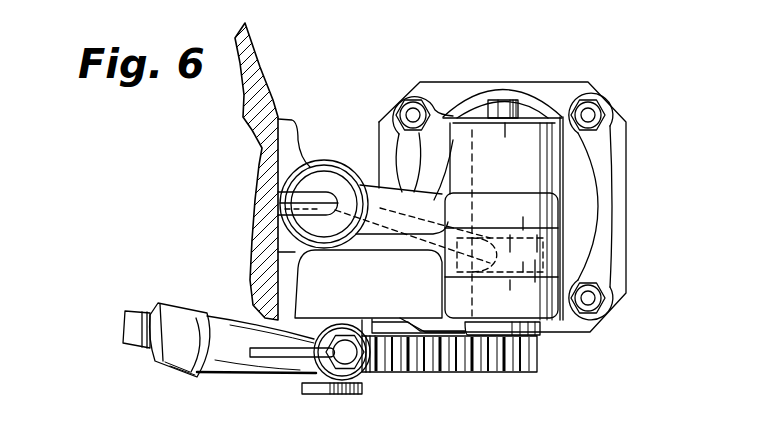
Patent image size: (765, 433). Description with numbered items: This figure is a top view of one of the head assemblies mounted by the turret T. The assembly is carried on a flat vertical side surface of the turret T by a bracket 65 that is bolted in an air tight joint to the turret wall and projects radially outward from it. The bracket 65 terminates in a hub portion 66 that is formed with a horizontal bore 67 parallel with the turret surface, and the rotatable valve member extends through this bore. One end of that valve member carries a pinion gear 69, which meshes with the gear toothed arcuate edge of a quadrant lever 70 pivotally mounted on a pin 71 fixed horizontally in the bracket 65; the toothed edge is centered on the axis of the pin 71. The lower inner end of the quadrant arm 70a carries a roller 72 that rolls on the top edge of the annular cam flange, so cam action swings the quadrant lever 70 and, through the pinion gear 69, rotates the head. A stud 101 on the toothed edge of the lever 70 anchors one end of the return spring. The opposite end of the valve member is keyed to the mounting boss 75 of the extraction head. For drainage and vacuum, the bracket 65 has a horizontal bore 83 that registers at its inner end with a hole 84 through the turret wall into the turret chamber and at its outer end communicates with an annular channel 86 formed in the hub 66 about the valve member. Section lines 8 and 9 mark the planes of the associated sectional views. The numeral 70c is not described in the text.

The turret T is at (258, 66).
The section line 8- 8 is at (505, 70).
The section line 9- 9 is at (280, 203).
The bracket 65 is at (290, 255).
The hub portion 66 is at (347, 169).
The horizontal bore 67 is at (552, 182).
The pinion gear 69 is at (538, 353).
The quadrant lever 70 is at (274, 378).
The quadrant arm 70a is at (228, 362).
The lever end portion 70c is at (435, 362).
The pin 71 is at (332, 396).
The roller 72 is at (160, 375).
The mounting boss 75 is at (517, 143).
The horizontal bore 83 is at (414, 244).
The hole 84 is at (258, 181).
The annular channel 86 is at (567, 255).
The stud 101 is at (338, 358).